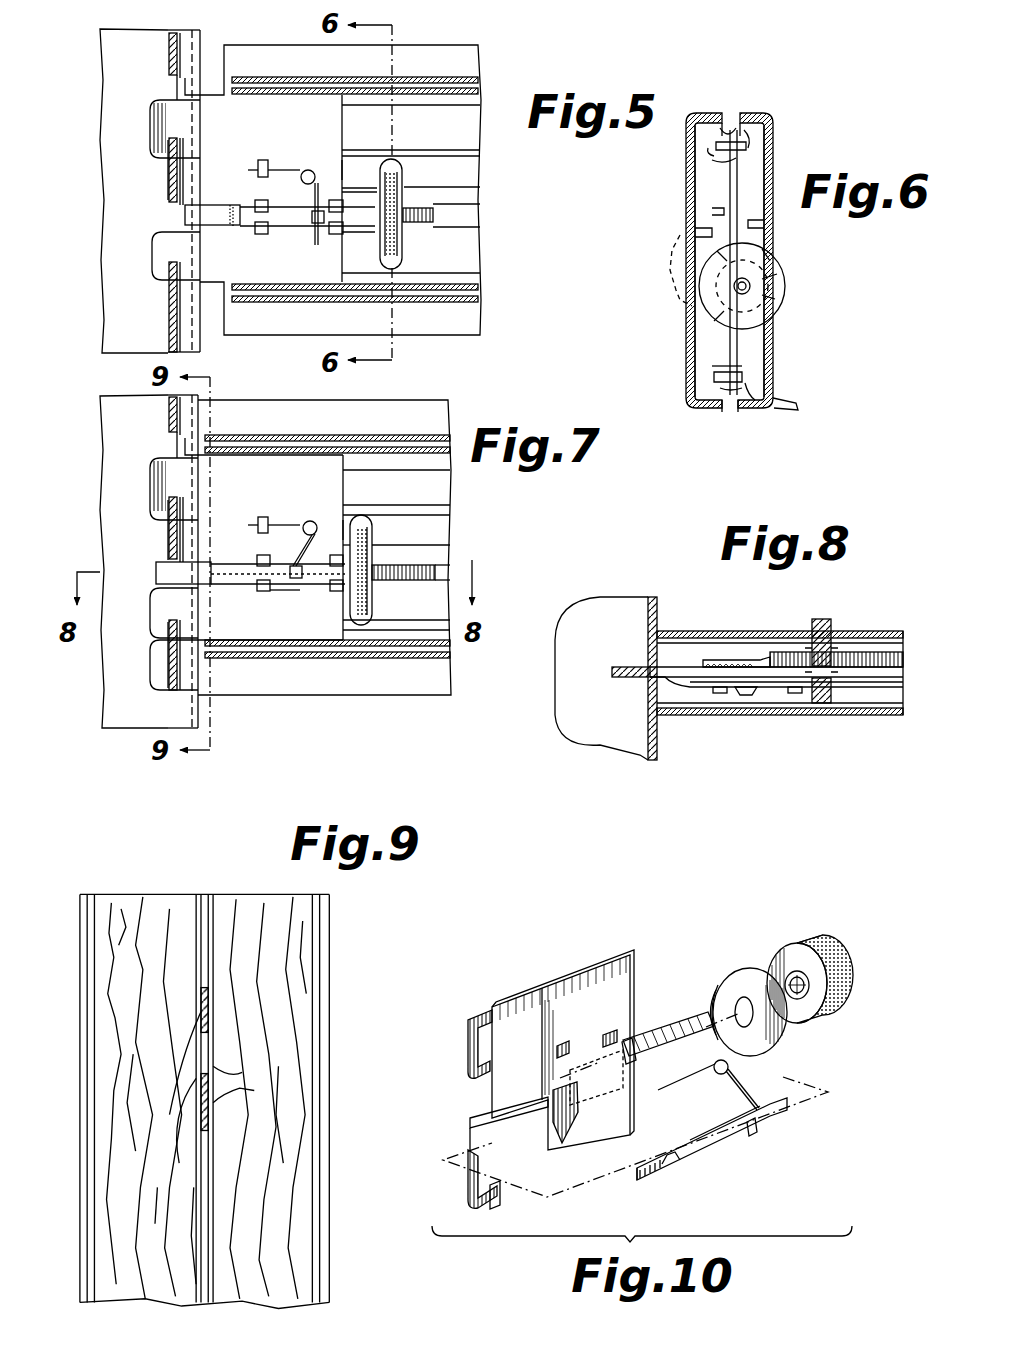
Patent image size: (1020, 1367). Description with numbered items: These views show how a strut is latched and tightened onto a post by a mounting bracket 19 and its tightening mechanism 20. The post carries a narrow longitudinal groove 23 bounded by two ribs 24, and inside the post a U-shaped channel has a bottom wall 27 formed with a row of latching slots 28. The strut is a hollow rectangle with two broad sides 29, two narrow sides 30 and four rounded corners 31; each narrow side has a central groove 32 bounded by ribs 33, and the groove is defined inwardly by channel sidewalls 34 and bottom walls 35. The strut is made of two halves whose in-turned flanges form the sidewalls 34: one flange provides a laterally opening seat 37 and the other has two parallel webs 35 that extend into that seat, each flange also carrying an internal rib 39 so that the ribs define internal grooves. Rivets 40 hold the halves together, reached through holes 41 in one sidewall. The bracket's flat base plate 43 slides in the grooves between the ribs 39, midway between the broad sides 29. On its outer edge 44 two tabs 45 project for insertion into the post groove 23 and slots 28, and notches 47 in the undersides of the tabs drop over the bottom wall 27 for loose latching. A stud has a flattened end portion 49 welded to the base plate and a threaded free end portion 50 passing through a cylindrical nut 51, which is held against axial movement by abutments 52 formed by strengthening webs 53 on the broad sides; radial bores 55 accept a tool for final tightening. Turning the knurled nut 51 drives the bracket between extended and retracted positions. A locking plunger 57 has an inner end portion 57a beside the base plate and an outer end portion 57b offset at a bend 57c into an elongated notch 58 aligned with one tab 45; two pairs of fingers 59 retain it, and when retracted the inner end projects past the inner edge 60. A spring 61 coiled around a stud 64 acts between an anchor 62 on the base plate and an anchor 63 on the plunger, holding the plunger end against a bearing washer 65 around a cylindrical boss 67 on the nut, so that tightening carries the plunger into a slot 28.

In FIG. 5, the mounting bracket 19 is at (120, 95).
In FIG. 6, the mounting bracket 19 is at (686, 200).
In FIG. 7, the mounting bracket 19 is at (368, 468).
In FIG. 10, the mounting bracket 19 is at (546, 978).
In FIG. 5, the tightening mechanism 20 is at (481, 262).
In FIG. 7, the tightening mechanism 20 is at (440, 595).
In FIG. 9, the longitudinal groove 23 is at (227, 1076).
In FIG. 9, the ribs 24 is at (66, 962).
In FIG. 5, the bottom wall 27 is at (170, 165).
In FIG. 7, the bottom wall 27 is at (170, 522).
In FIG. 9, the bottom wall 27 is at (176, 920).
In FIG. 5, the slots 28 is at (172, 88).
In FIG. 7, the slots 28 is at (168, 450).
In FIG. 9, the slots 28 is at (205, 1100).
In FIG. 6, the broad sides 29 is at (685, 343).
In FIG. 6, the narrow sides 30 is at (766, 118).
In FIG. 6, the corners 31 is at (770, 135).
In FIG. 6, the longitudinal groove 32 is at (727, 125).
In FIG. 6, the ribs 33 is at (722, 410).
In FIG. 6, the sidewalls 34 is at (716, 150).
In FIG. 6, the bottom walls / webs 35 is at (738, 128).
In FIG. 6, the seat 37 is at (746, 262).
In FIG. 6, the internal ribs 39 is at (742, 366).
In FIG. 6, the rivets 40 is at (752, 140).
In FIG. 6, the holes 41 is at (688, 150).
In FIG. 10, the base plate 43 is at (606, 1000).
In FIG. 5, the edge 44 is at (184, 154).
In FIG. 7, the edge 44 is at (184, 524).
In FIG. 10, the edge 44 is at (470, 1120).
In FIG. 5, the tabs 45 is at (151, 130).
In FIG. 7, the tabs 45 is at (150, 468).
In FIG. 9, the tabs 45 is at (165, 975).
In FIG. 10, the tabs 45 is at (468, 1022).
In FIG. 5, the notches 47 is at (182, 137).
In FIG. 7, the notches 47 is at (182, 512).
In FIG. 10, the notches 47 is at (495, 1095).
In FIG. 8, the flattened end portion 49 is at (722, 655).
In FIG. 10, the flattened end portion 49 is at (590, 1102).
In FIG. 5, the threaded free end portion 50 is at (433, 214).
In FIG. 7, the threaded free end portion 50 is at (420, 570).
In FIG. 8, the threaded free end portion 50 is at (895, 640).
In FIG. 10, the threaded free end portion 50 is at (709, 1015).
In FIG. 5, the cylindrical nut 51 is at (403, 172).
In FIG. 7, the cylindrical nut 51 is at (373, 520).
In FIG. 8, the cylindrical nut 51 is at (825, 618).
In FIG. 10, the cylindrical nut 51 is at (840, 960).
In FIG. 6, the abutments 52 is at (698, 248).
In FIG. 8, the abutments 52 is at (814, 630).
In FIG. 6, the strengthening webs 53 is at (694, 231).
In FIG. 8, the strengthening webs 53 is at (672, 640).
In FIG. 5, the radial bores 55 is at (410, 262).
In FIG. 7, the radial bores 55 is at (395, 575).
In FIG. 10, the radial bores 55 is at (820, 942).
In FIG. 5, the locking plunger 57 is at (247, 231).
In FIG. 7, the locking plunger 57 is at (230, 588).
In FIG. 8, the locking plunger 57 is at (690, 680).
In FIG. 9, the locking plunger 57 is at (257, 1089).
In FIG. 10, the locking plunger 57 is at (738, 1142).
In FIG. 7, the inner end portion 57a is at (323, 590).
In FIG. 10, the inner end portion 57a is at (714, 1154).
In FIG. 5, the outer end portion 57b is at (196, 242).
In FIG. 7, the outer end portion 57b is at (156, 574).
In FIG. 8, the outer end portion 57b is at (615, 668).
In FIG. 10, the outer end portion 57b is at (650, 1188).
In FIG. 7, the bend 57c is at (232, 596).
In FIG. 8, the bend 57c is at (668, 685).
In FIG. 10, the bend 57c is at (677, 1172).
In FIG. 7, the elongated notch 58 is at (174, 613).
In FIG. 10, the elongated notch 58 is at (516, 1142).
In FIG. 5, the fingers 59 is at (256, 202).
In FIG. 7, the fingers 59 is at (270, 562).
In FIG. 8, the fingers 59 is at (720, 695).
In FIG. 10, the fingers 59 is at (640, 1042).
In FIG. 10, the inner edge 60 is at (632, 962).
In FIG. 5, the spring 61 is at (300, 172).
In FIG. 7, the spring 61 is at (300, 532).
In FIG. 10, the spring 61 is at (745, 1090).
In FIG. 5, the anchor 62 is at (263, 158).
In FIG. 7, the anchor 62 is at (265, 516).
In FIG. 10, the anchor 62 is at (567, 1046).
In FIG. 5, the anchor 63 is at (312, 222).
In FIG. 7, the anchor 63 is at (302, 566).
In FIG. 8, the anchor 63 is at (748, 697).
In FIG. 10, the anchor 63 is at (752, 1135).
In FIG. 5, the stud 64 is at (322, 165).
In FIG. 7, the stud 64 is at (325, 525).
In FIG. 10, the stud 64 is at (615, 1032).
In FIG. 5, the bearing washer 65 is at (386, 246).
In FIG. 10, the bearing washer 65 is at (753, 968).
In FIG. 10, the cylindrical boss 67 is at (800, 1000).